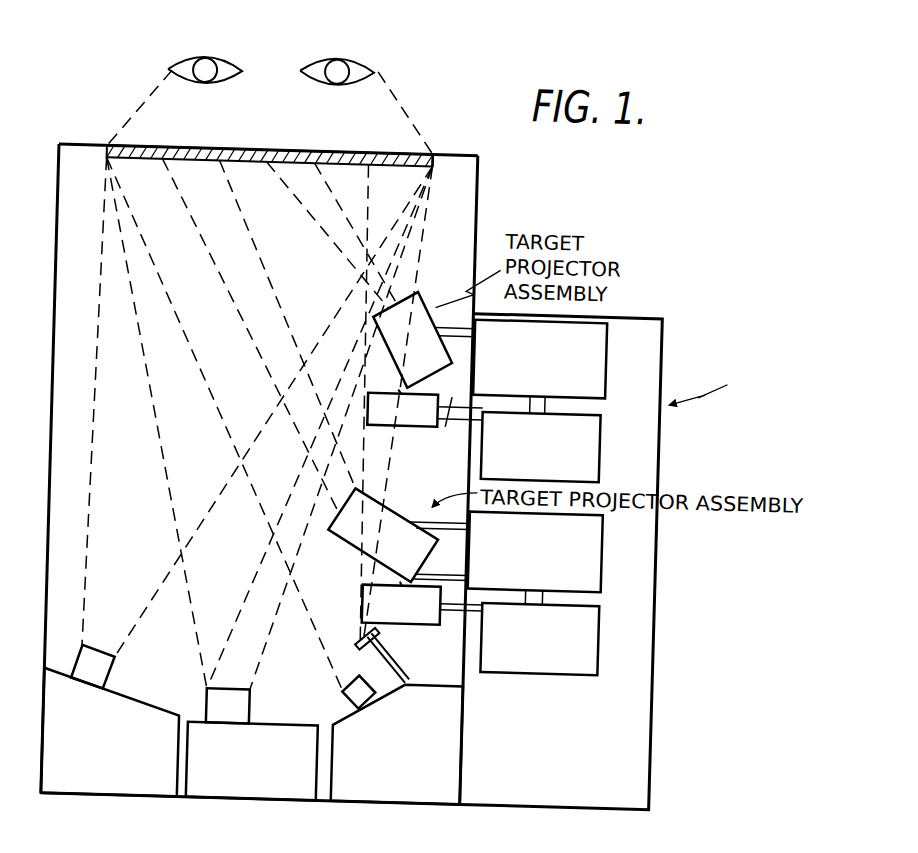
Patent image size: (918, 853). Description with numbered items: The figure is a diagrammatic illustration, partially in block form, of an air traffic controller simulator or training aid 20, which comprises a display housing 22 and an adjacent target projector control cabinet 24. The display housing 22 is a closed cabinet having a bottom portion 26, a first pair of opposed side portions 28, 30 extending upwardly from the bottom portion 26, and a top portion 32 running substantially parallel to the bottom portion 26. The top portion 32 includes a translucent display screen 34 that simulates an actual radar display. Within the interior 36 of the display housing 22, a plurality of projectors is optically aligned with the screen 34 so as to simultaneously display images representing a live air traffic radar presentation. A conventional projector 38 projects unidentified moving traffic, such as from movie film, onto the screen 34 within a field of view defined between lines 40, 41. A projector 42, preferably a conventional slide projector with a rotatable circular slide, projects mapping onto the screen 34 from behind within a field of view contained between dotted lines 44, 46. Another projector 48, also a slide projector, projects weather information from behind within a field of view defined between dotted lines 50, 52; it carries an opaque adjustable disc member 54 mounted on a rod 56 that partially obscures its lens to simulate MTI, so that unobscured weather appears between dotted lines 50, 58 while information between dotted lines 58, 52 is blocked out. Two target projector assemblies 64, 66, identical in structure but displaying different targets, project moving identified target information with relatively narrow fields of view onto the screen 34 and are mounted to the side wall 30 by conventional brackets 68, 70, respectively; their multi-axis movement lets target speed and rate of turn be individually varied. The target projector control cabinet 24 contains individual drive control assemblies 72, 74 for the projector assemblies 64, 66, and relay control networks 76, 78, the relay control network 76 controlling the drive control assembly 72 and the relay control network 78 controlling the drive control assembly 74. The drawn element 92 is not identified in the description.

The air traffic controller simulator 20 is at (423, 497).
The display housing 22 is at (59, 247).
The target projector control cabinet 24 is at (669, 326).
The bottom portion 26 is at (198, 793).
The side portion 28 is at (59, 200).
The side portion 30 is at (482, 158).
The top portion 32 is at (437, 144).
The display screen 34 is at (275, 143).
The interior 36 is at (282, 268).
The projector 38 is at (156, 700).
The line 40 is at (104, 383).
The line 41 is at (229, 494).
The projector 42 is at (283, 717).
The dotted line 44 is at (164, 404).
The dotted line 46 is at (280, 637).
The projector 48 is at (455, 674).
The dotted line 50 is at (291, 542).
The dotted line 52 is at (399, 518).
The adjustable disc member 54 is at (351, 632).
The rod 56 is at (404, 650).
The dotted line 58 is at (368, 430).
The target projector assembly 64 is at (390, 333).
The target projector assembly 66 is at (386, 543).
The bracket 68 is at (457, 412).
The bracket 70 is at (437, 565).
The drive control assembly 72 is at (613, 317).
The drive control assembly 74 is at (611, 512).
The relay control network 76 is at (608, 428).
The relay control network 78 is at (612, 613).
The motor coupling 92 is at (375, 385).